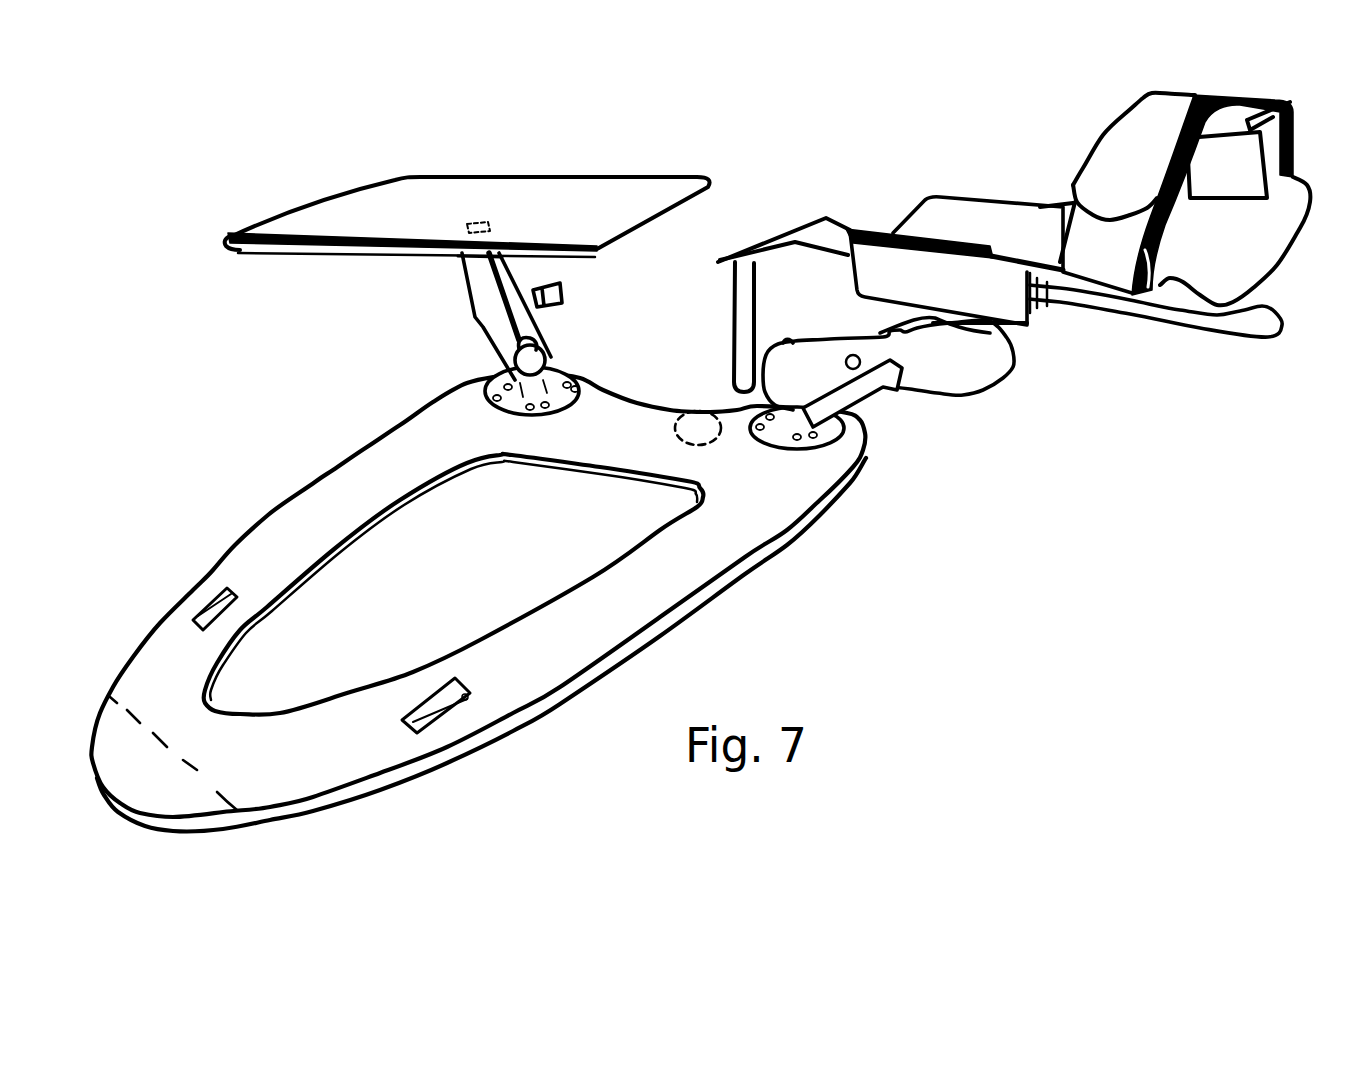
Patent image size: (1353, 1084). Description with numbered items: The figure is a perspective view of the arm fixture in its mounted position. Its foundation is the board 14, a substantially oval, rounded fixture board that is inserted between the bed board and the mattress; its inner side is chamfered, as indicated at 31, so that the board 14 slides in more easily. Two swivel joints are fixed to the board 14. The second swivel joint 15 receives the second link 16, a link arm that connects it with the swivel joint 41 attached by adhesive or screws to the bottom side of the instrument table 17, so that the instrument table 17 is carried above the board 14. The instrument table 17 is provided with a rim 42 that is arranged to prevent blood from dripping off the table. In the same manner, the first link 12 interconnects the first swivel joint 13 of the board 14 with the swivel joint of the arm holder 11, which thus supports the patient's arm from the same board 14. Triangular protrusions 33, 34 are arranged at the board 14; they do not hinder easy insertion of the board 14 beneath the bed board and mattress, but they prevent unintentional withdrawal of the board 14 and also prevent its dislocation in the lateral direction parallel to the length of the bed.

The arm holder 11 is at (993, 295).
The first link 12 is at (920, 372).
The first swivel joint 13 is at (714, 408).
The board 14 is at (690, 578).
The second swivel joint 15 is at (500, 382).
The second link 16 is at (473, 309).
The instrument table 17 is at (338, 222).
The chamfered inner side 31 is at (173, 790).
The triangular protrusion 33 is at (467, 700).
The triangular protrusion 34 is at (203, 610).
The swivel joint 41 is at (437, 258).
The rim 42 is at (240, 246).